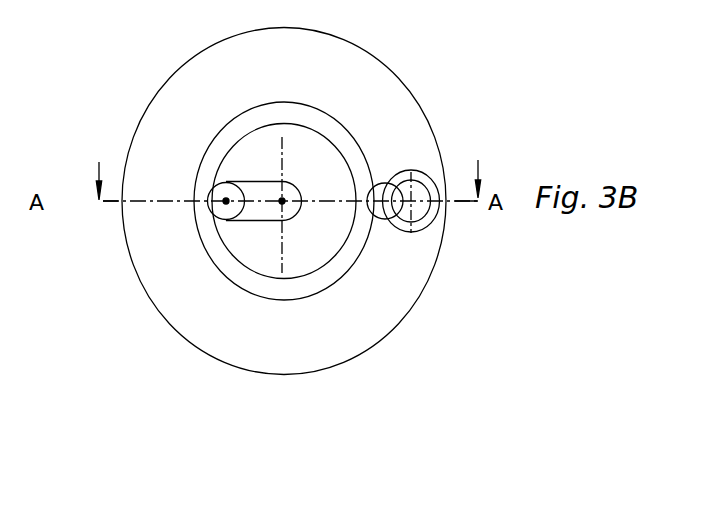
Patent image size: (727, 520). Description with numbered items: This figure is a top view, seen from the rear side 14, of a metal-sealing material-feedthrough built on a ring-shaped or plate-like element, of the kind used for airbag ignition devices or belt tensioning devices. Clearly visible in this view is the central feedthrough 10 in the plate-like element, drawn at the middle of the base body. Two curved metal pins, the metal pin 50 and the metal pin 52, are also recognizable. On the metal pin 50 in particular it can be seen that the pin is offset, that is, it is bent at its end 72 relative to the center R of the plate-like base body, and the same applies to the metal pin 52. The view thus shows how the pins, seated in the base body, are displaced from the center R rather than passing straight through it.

The central feedthrough 10 is at (312, 153).
The rear side 14 is at (265, 348).
The metal pin 50 is at (226, 201).
The metal pin 52 is at (383, 207).
The end 72 is at (222, 183).
The center R is at (282, 201).